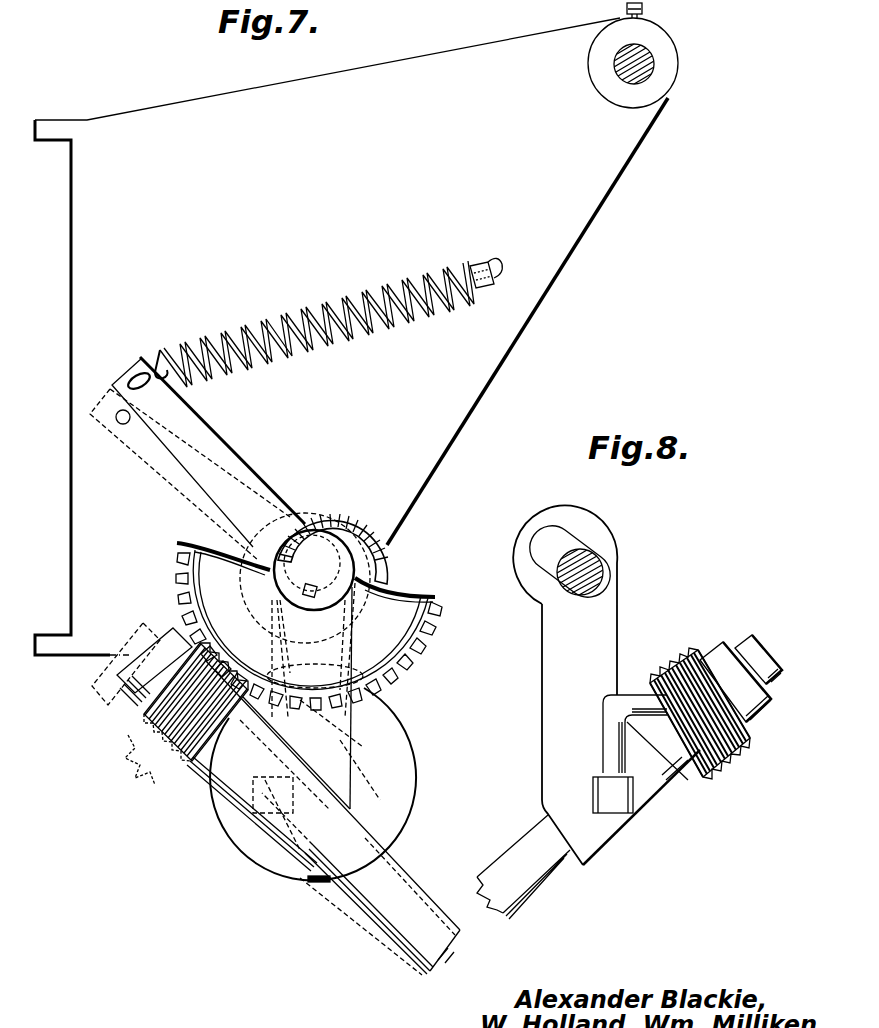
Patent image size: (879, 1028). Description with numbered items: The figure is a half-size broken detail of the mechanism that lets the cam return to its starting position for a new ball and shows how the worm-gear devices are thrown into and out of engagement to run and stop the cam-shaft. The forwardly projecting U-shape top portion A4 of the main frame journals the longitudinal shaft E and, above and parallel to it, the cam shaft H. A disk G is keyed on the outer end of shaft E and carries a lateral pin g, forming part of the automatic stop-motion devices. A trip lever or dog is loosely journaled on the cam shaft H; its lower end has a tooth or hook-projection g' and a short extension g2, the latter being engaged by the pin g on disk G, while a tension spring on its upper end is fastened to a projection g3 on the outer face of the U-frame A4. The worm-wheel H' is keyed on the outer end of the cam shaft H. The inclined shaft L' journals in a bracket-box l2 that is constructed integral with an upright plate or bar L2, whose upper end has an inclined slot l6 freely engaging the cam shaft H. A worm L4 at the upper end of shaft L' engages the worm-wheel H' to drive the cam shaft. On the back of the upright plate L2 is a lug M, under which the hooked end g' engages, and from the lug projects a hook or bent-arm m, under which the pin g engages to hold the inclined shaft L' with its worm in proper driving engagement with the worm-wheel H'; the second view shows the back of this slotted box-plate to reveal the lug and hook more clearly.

In FIG. 7, the U-shape top portion of main frame A4 is at (345, 200).
In FIG. 7, the short extension g2 is at (278, 319).
In FIG. 7, the projection g3 is at (494, 284).
In FIG. 7, the tooth or hook-projection g' is at (197, 645).
In FIG. 7, the cam shaft H is at (305, 578).
In FIG. 8, the cam shaft H is at (593, 543).
In FIG. 7, the inclined slot l6 is at (357, 545).
In FIG. 8, the inclined slot l6 is at (570, 561).
In FIG. 7, the longitudinal shaft E is at (340, 745).
In FIG. 7, the worm-wheel H' is at (322, 630).
In FIG. 7, the upright plate or bar L2 is at (352, 722).
In FIG. 8, the upright plate or bar L2 is at (592, 668).
In FIG. 7, the disk G is at (405, 764).
In FIG. 7, the inclined shaft L' is at (332, 817).
In FIG. 8, the inclined shaft L' is at (523, 867).
In FIG. 7, the hook or bent-arm m is at (242, 763).
In FIG. 8, the hook or bent-arm m is at (617, 712).
In FIG. 7, the lug M is at (248, 878).
In FIG. 8, the lug M is at (603, 793).
In FIG. 7, the worm L4 is at (190, 752).
In FIG. 8, the worm L4 is at (765, 781).
In FIG. 7, the lateral pin g is at (249, 873).
In FIG. 7, the bracket-box l2 is at (235, 790).
In FIG. 8, the bracket-box l2 is at (641, 812).